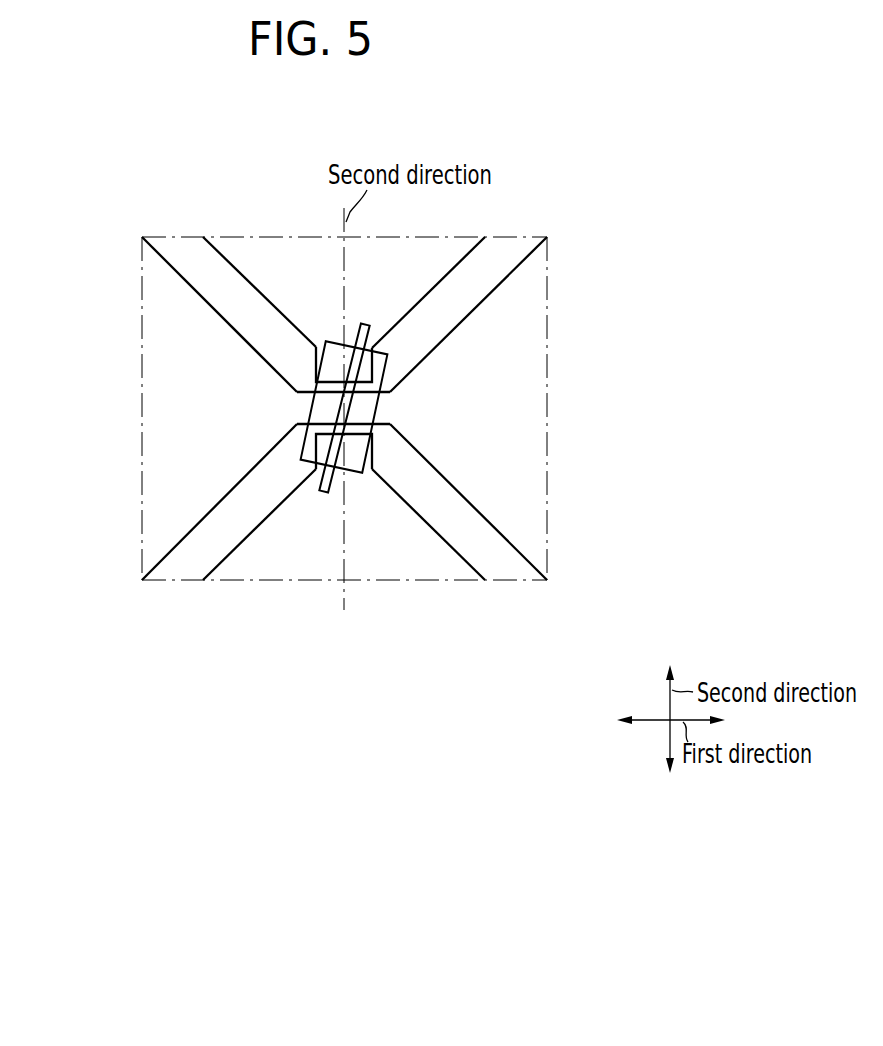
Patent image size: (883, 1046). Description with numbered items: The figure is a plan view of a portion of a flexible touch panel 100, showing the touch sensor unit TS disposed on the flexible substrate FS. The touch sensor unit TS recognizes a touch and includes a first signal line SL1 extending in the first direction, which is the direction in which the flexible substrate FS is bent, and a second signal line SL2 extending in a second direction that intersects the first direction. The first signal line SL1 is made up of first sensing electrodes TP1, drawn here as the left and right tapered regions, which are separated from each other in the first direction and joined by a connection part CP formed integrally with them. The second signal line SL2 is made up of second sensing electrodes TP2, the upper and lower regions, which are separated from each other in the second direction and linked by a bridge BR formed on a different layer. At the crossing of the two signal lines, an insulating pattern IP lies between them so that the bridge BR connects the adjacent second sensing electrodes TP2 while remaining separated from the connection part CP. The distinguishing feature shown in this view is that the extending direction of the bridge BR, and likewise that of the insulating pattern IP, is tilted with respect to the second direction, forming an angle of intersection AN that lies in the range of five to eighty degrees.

The flexible touch panel 100 is at (367, 127).
The first signal line SL1 is at (156, 344).
The second signal line SL2 is at (262, 246).
The first sensing electrode TP1 is at (173, 328).
The second sensing electrode TP2 is at (287, 252).
The touch sensor unit TS is at (533, 470).
The connection part CP is at (388, 480).
The flexible substrate FS is at (498, 567).
The insulating pattern IP is at (380, 407).
The bridge BR is at (363, 372).
The angle of intersection AN is at (352, 325).